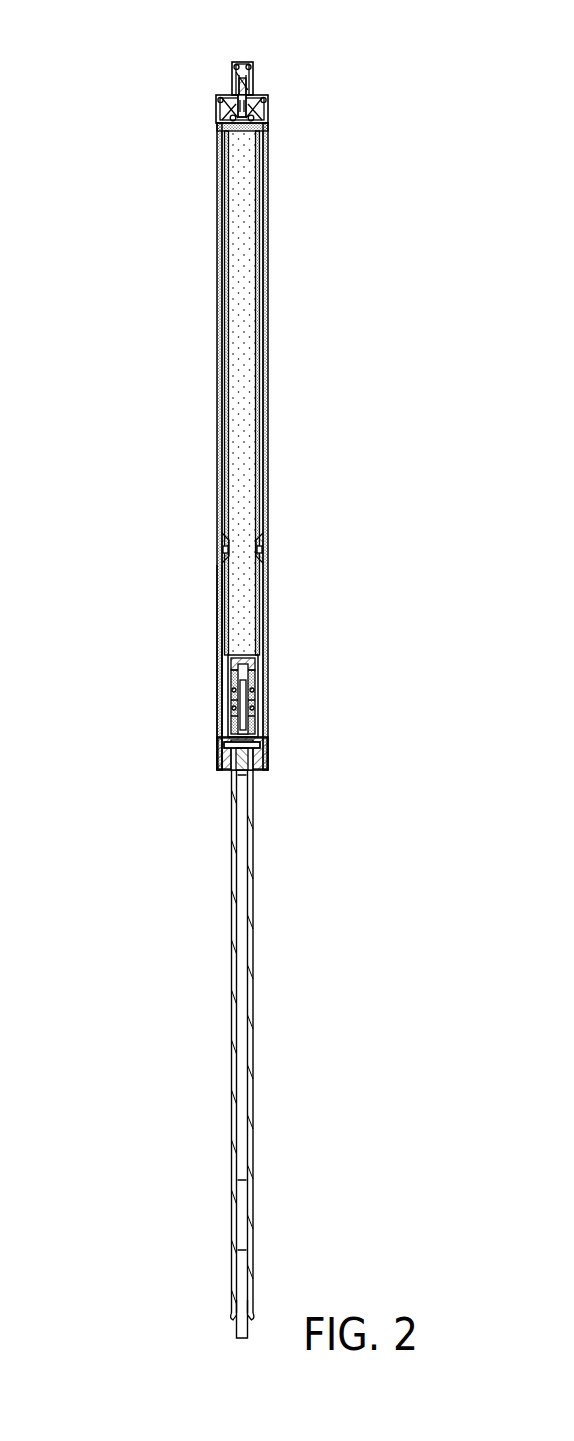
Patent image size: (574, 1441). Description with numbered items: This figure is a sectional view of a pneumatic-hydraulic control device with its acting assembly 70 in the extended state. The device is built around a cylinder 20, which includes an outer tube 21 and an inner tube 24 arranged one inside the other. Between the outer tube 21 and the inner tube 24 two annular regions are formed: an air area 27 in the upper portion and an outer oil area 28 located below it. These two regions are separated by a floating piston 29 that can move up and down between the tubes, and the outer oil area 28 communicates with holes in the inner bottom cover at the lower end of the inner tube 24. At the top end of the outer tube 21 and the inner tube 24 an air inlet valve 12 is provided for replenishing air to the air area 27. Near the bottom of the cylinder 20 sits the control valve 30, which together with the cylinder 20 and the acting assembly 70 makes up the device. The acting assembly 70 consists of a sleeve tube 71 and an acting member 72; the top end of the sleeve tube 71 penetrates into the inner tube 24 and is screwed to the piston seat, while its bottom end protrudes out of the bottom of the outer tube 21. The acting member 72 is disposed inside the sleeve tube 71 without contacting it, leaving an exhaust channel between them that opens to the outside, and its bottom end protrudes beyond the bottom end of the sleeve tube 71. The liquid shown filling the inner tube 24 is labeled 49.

The air inlet valve 12 is at (270, 75).
The cylinder 20 is at (120, 150).
The outer tube 21 is at (219, 173).
The inner tube 24 is at (229, 236).
The air area 27 is at (221, 311).
The liquid 49 is at (246, 341).
The floating piston 29 is at (223, 546).
The outer oil area 28 is at (222, 609).
The control valve 30 is at (215, 783).
The acting assembly 70 is at (133, 1020).
The sleeve tube 71 is at (233, 1041).
The acting member 72 is at (246, 1099).